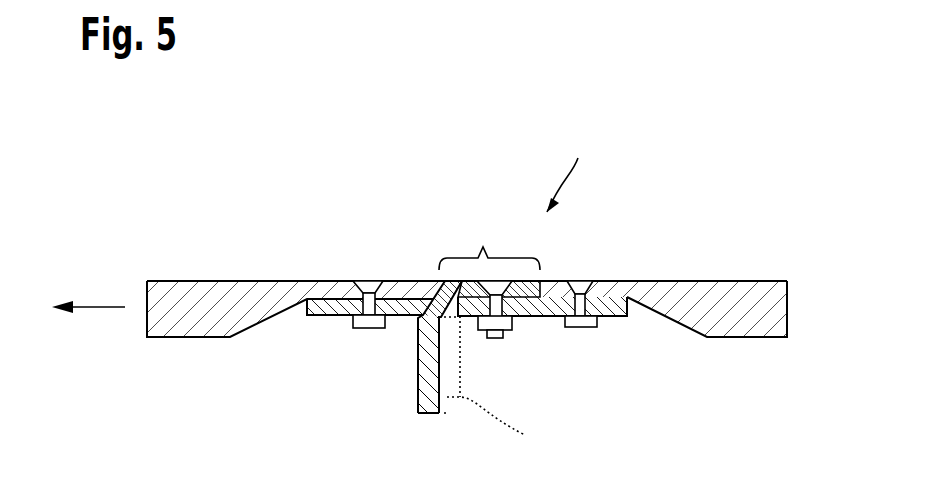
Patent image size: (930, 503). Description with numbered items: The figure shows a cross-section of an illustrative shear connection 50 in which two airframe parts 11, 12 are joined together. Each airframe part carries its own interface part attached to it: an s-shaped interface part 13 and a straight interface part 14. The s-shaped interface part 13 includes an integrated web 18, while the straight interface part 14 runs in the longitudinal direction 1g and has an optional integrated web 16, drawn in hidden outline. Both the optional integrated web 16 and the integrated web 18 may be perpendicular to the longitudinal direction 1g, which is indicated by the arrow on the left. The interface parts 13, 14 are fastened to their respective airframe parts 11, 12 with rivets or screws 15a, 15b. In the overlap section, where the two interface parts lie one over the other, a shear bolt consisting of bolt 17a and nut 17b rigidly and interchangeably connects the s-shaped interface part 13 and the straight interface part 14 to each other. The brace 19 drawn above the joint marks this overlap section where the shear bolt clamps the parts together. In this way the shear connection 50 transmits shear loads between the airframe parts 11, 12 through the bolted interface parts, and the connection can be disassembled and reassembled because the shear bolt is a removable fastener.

The airframe part 11 is at (310, 290).
The airframe part 12 is at (715, 290).
The s-shaped interface part 13 is at (327, 307).
The straight interface part 14 is at (618, 313).
The rivet or screw 15a is at (370, 320).
The rivet or screw 15b is at (580, 318).
The optional integrated web 16 is at (500, 382).
The bolt 17a is at (503, 292).
The nut 17b is at (515, 318).
The integrated web 18 is at (427, 392).
The joint region 19 is at (489, 240).
The shear connection 50 is at (570, 170).
The longitudinal direction 1g is at (93, 310).